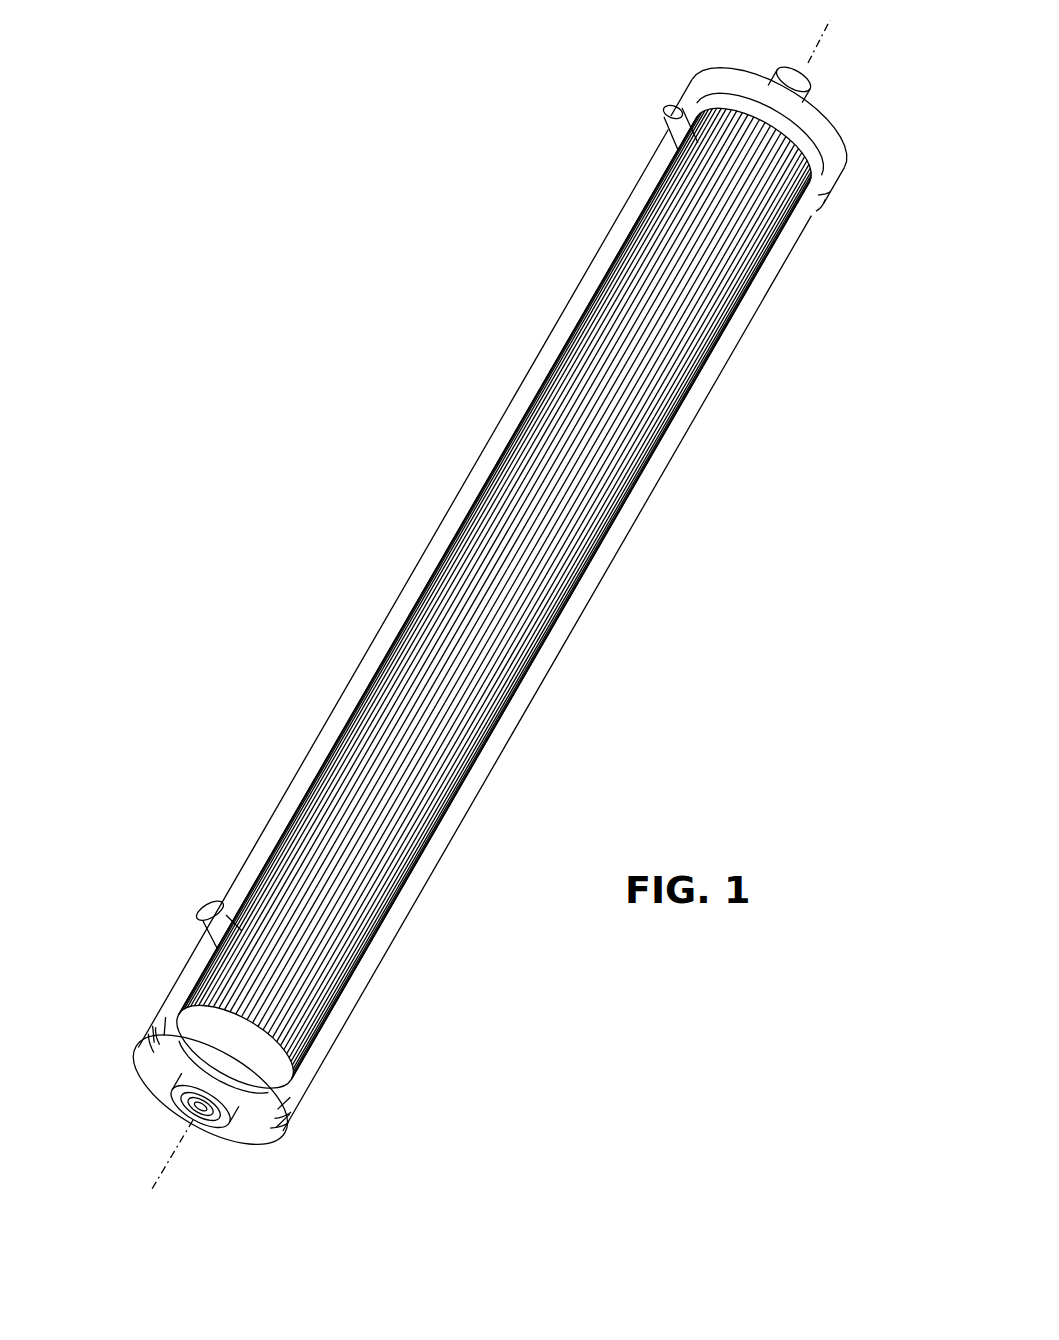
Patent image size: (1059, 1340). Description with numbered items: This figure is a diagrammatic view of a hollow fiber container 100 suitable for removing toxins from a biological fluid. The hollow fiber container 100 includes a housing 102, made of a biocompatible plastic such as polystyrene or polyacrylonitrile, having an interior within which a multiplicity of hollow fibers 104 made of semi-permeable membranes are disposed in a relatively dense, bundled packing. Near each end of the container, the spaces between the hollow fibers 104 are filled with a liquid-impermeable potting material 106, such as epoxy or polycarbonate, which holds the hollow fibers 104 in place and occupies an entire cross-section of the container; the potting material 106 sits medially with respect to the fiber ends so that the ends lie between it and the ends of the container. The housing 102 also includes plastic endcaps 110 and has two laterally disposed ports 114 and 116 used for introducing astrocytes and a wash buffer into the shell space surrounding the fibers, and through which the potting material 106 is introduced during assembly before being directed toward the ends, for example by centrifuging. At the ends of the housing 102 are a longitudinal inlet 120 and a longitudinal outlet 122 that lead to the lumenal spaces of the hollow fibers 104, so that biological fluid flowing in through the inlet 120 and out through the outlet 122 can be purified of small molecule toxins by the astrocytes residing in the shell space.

The hollow fiber container 100 is at (781, 303).
The housing 102 is at (513, 395).
The hollow fibers 104 is at (607, 525).
The potting material 106 is at (828, 190).
The endcaps 110 is at (848, 157).
The lateral port 114 is at (661, 106).
The lateral port 116 is at (197, 908).
The longitudinal inlet 120 is at (792, 68).
The longitudinal outlet 122 is at (202, 1124).